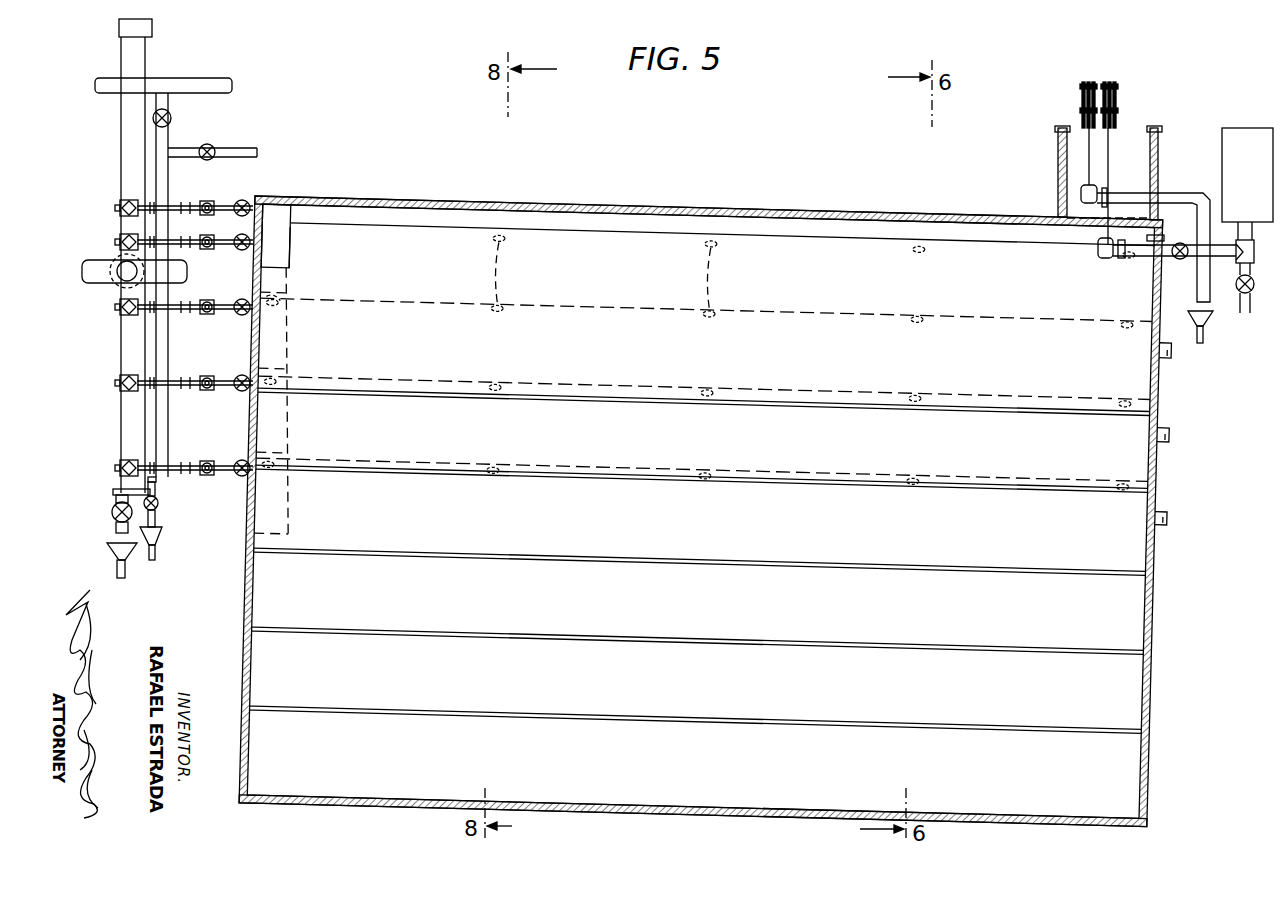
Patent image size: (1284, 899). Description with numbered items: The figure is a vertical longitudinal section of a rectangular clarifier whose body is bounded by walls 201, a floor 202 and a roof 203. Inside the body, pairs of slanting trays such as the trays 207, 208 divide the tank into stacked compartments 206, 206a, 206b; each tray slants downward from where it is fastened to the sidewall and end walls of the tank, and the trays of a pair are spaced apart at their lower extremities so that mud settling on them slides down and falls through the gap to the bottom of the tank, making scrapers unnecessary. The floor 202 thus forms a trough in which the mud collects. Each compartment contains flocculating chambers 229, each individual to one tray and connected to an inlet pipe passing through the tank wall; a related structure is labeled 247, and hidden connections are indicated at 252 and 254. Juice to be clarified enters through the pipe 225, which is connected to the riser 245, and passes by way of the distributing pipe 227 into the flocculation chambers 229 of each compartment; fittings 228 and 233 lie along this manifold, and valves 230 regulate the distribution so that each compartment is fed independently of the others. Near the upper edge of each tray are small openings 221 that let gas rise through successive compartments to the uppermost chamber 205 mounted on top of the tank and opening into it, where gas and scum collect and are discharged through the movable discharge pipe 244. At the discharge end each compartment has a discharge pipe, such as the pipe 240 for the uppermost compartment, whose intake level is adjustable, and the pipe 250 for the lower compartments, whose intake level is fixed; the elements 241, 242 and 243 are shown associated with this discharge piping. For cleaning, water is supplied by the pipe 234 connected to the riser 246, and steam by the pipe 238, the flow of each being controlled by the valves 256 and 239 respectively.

The walls 201 is at (243, 580).
The floor 202 is at (338, 800).
The roof 203 is at (566, 200).
The uppermost chamber 205 is at (1060, 152).
The compartment 206 is at (707, 278).
The compartment 206a is at (704, 361).
The third compartment 206b is at (703, 444).
The tray 207 is at (747, 399).
The tray 208 is at (746, 466).
The small openings 221 is at (633, 272).
The pipe 225 is at (97, 285).
The distributing pipe 227 is at (216, 222).
The union fitting 228 is at (224, 202).
The flocculating chamber 229 is at (319, 248).
The valve 230 is at (240, 200).
The valve 233 is at (124, 202).
The pipe 234 is at (185, 80).
The pipe 238 is at (258, 151).
The valve 239 is at (212, 146).
The discharge pipe 240 is at (1145, 257).
The reservoir 241 is at (1247, 127).
The elbow connection 242 is at (1098, 250).
The pipe 243 is at (1178, 193).
The movable discharge pipe 244 is at (1082, 196).
The riser 245 is at (124, 138).
The riser 246 is at (169, 175).
The inlet box 247 is at (310, 235).
The discharge pipe 250 is at (1174, 360).
The hidden conduit 252 is at (301, 401).
The opening 254 is at (306, 311).
The valve 256 is at (171, 118).